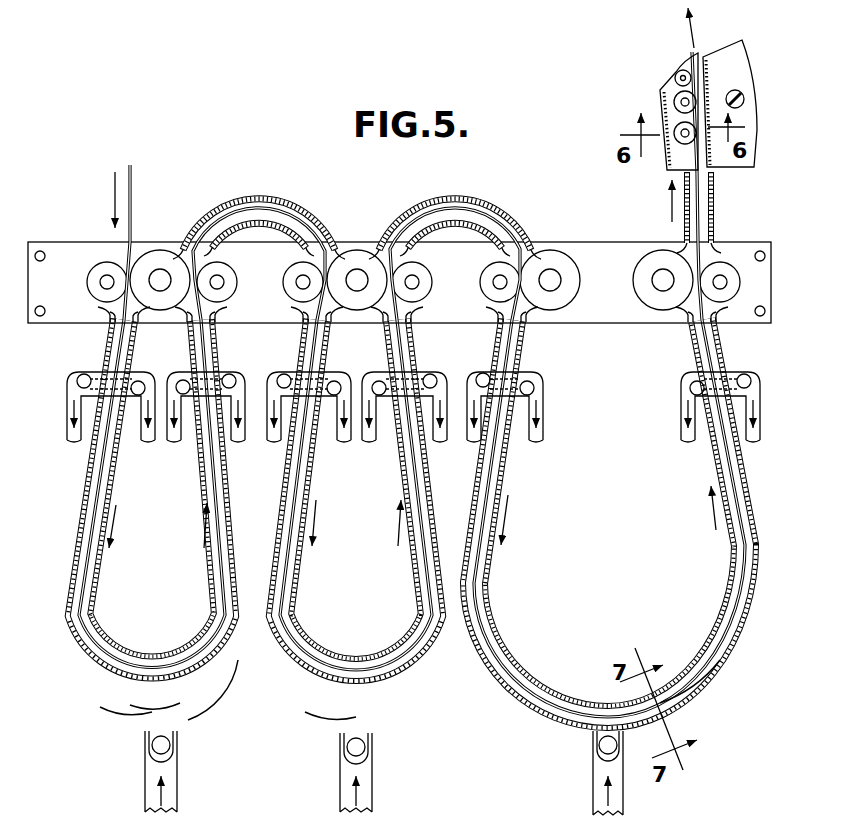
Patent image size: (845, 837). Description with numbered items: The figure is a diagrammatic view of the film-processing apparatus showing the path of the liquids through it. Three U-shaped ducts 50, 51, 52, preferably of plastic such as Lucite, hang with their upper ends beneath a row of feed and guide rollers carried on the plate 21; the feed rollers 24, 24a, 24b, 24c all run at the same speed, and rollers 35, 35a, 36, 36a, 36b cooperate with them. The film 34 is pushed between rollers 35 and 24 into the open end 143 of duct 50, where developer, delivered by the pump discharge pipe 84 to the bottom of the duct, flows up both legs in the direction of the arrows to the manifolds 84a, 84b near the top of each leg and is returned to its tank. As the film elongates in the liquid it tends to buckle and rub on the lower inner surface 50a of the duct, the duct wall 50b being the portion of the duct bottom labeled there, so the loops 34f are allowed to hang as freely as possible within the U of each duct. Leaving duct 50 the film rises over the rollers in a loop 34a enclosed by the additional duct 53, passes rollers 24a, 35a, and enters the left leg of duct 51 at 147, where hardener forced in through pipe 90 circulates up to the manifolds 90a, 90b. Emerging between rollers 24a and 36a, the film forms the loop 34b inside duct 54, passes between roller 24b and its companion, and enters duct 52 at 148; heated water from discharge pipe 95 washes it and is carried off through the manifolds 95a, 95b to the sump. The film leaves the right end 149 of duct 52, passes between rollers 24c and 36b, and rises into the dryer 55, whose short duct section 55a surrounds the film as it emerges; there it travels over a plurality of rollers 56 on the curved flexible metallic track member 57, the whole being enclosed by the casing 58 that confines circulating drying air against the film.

The plate 21 is at (50, 248).
The feed roller 24 is at (163, 254).
The feed roller 24a is at (358, 250).
The feed roller 24b is at (556, 251).
The feed roller 24c is at (652, 257).
The film 34 is at (134, 206).
The loop of film 34a is at (259, 211).
The loop of film 34b is at (457, 207).
The loop of film 34f is at (118, 720).
The roller 35 is at (93, 273).
The roller 35a is at (294, 285).
The guide roller 36 is at (225, 268).
The roller 36a is at (425, 273).
The roller 36b is at (728, 265).
The U-shaped duct 50 is at (128, 357).
The lower inner surface of duct 50a is at (207, 716).
The inner channel wall 50b is at (152, 712).
The U-shaped duct 51 is at (297, 617).
The U-shaped duct 52 is at (489, 601).
The additional duct 53 is at (222, 208).
The additional duct 54 is at (507, 217).
The dryer 55 is at (730, 103).
The section of duct 55a is at (715, 196).
The rollers 56 is at (678, 76).
The curved flexible metallic track member 57 is at (669, 92).
The casing 58 is at (663, 106).
The discharge pipe 84 is at (172, 775).
The manifold 84a is at (87, 377).
The manifold 84b is at (224, 372).
The pipe 90 is at (367, 774).
The manifold 90a is at (293, 362).
The manifold 90b is at (427, 375).
The discharge pipe 95 is at (618, 794).
The manifold 95a is at (538, 380).
The manifold 95b is at (689, 388).
The open end of duct 143 is at (108, 333).
The entrance of duct 147 is at (304, 330).
The entrance of duct 148 is at (522, 340).
The right end of duct 149 is at (724, 343).